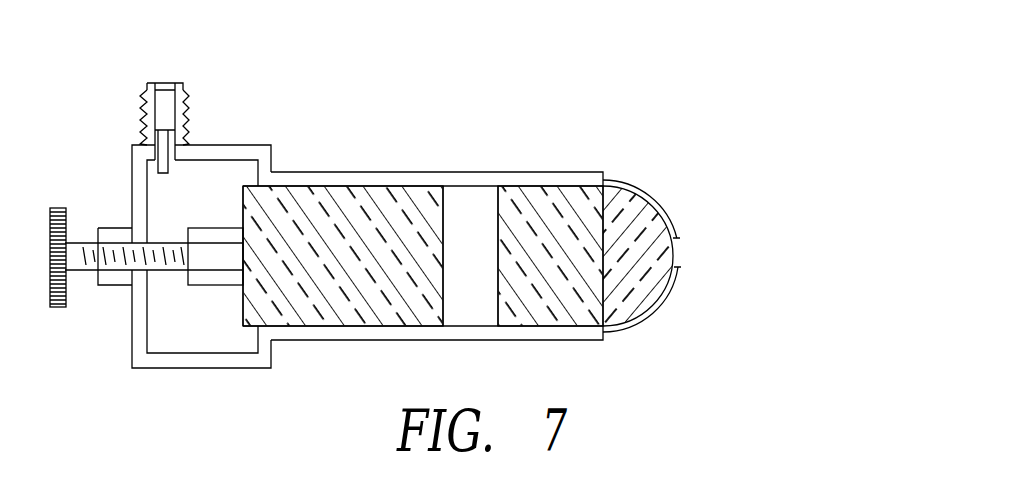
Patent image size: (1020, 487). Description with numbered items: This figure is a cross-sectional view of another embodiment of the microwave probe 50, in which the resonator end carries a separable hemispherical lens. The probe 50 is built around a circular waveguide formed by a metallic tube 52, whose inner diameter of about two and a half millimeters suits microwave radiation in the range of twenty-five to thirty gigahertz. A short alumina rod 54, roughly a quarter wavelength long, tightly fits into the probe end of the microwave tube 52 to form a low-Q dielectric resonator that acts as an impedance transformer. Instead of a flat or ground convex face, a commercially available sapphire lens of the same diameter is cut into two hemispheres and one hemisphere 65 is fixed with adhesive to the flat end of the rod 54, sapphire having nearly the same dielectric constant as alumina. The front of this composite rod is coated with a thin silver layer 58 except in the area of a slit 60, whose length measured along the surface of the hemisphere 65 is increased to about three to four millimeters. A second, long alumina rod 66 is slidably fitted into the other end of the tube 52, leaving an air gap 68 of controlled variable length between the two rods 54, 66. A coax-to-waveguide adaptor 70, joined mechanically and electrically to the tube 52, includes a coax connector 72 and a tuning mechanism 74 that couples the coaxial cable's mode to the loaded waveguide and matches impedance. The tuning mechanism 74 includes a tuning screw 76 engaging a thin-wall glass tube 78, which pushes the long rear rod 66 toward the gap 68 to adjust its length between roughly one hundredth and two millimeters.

The microwave probe 50 is at (500, 155).
The metallic tube 52 is at (323, 178).
The short alumina rod 54 is at (548, 193).
The thin silver layer 58 is at (664, 205).
The slit 60 is at (680, 252).
The hemisphere 65 is at (641, 188).
The long alumina rod 66 is at (396, 188).
The air gap 68 is at (480, 200).
The coax-to-waveguide adaptor 70 is at (231, 152).
The coax connector 72 is at (185, 98).
The tuning mechanism 74 is at (89, 306).
The tuning screw 76 is at (92, 243).
The thin-wall glass tube 78 is at (207, 275).